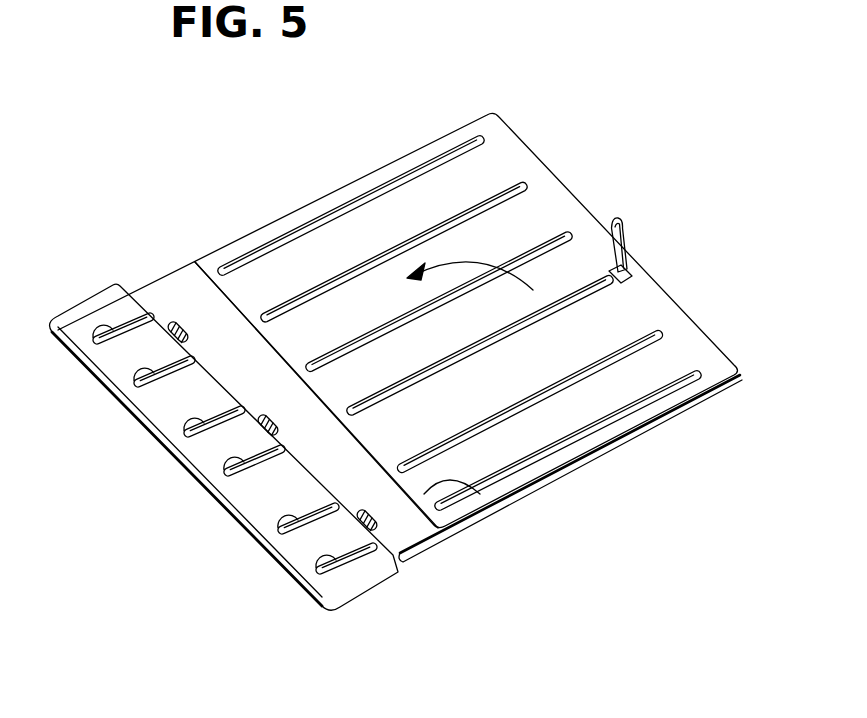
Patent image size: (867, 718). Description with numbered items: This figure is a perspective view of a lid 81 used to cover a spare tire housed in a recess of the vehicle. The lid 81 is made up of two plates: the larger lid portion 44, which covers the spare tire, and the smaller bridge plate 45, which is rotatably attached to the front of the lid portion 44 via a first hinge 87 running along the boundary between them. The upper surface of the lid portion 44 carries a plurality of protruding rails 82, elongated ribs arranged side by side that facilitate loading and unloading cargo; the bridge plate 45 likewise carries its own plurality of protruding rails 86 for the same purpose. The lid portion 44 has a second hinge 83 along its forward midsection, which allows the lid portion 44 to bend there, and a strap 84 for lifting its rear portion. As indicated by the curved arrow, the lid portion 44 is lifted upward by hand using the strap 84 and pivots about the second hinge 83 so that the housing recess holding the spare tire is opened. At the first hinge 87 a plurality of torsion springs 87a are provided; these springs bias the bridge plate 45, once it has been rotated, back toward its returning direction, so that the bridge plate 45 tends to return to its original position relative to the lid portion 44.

The lid 81 is at (188, 122).
The lid portion 44 is at (332, 176).
The bridge plate 45 is at (84, 270).
The protruding rails 82 is at (398, 186).
The second hinge 83 is at (482, 500).
The strap 84 is at (622, 220).
The protruding rails 86 is at (128, 328).
The first hinge 87 is at (318, 476).
The torsion springs 87a is at (186, 328).